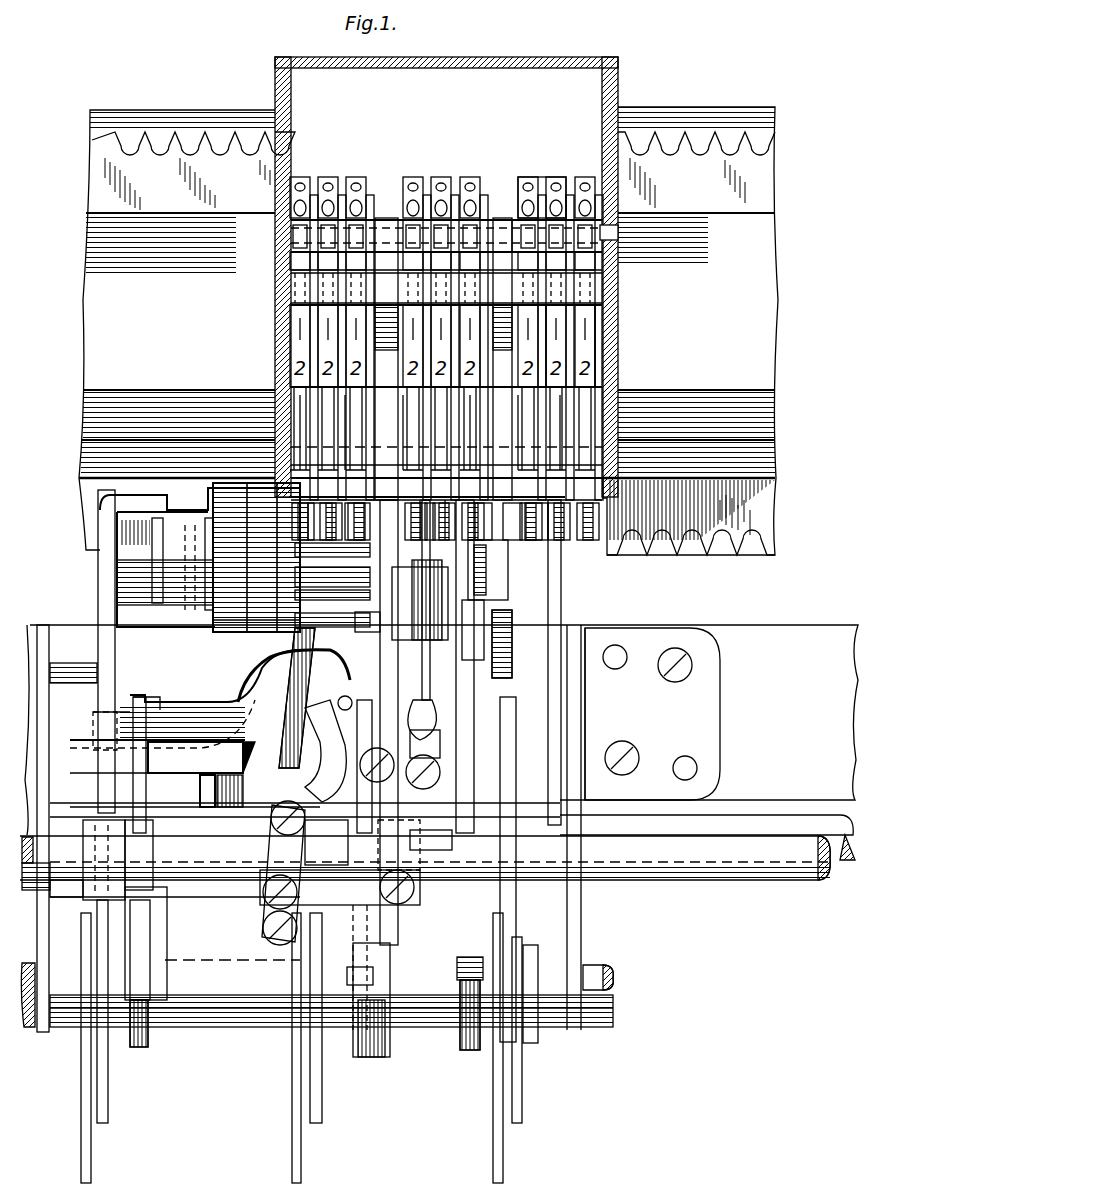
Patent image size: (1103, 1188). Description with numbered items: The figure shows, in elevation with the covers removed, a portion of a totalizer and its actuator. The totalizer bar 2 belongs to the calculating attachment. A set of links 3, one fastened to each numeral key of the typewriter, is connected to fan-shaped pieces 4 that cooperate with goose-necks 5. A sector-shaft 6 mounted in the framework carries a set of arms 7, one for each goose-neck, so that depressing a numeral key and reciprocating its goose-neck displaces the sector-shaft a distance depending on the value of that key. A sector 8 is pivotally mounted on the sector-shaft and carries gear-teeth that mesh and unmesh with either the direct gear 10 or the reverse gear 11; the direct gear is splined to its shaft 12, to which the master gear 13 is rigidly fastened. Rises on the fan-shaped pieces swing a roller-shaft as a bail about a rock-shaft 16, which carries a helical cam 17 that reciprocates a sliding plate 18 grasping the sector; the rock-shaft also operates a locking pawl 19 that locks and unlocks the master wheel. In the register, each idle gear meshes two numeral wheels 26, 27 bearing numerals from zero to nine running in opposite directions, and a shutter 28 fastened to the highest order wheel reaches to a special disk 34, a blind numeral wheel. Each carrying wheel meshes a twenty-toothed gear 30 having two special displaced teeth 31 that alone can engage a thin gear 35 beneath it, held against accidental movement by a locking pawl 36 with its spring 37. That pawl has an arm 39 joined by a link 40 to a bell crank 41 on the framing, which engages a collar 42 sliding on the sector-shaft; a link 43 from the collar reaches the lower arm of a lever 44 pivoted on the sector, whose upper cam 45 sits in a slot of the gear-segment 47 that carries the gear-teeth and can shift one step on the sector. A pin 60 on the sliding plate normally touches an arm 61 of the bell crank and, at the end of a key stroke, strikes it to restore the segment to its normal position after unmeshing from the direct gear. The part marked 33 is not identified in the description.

The totalizer bar 2 is at (13, 670).
The links 3 is at (92, 1153).
The fan-shaped pieces 4 is at (98, 1088).
The goose-necks 5 is at (150, 1050).
The sector-shaft 6 is at (655, 880).
The arms 7 is at (752, 640).
The sector 8 is at (428, 306).
The direct gear 10 is at (260, 640).
The reverse gear 11 is at (205, 505).
The shaft 12 is at (165, 600).
The master gear 13 is at (470, 600).
The rock-shaft 16 is at (748, 815).
The helical cam 17 is at (200, 785).
The sliding plate 18 is at (170, 705).
The locking pawl 19 is at (460, 683).
The numeral wheel 26 is at (548, 200).
The numeral wheel 27 is at (560, 365).
The shutter 28 is at (498, 240).
The twenty-toothed gear 30 is at (560, 435).
The special displaced teeth 31 is at (440, 395).
The stop 33 is at (355, 400).
The special disk 34 is at (585, 218).
The thin gear 35 is at (450, 550).
The locking pawl 36 is at (365, 580).
The spring 37 is at (440, 515).
The arm 39 is at (440, 612).
The link 40 is at (470, 655).
The bell crank 41 is at (405, 785).
The collar 42 is at (410, 848).
The link 43 is at (360, 900).
The lever 44 is at (265, 870).
The cam 45 is at (328, 710).
The gear-segment 47 is at (390, 612).
The pin 60 is at (310, 690).
The arm 61 is at (380, 700).